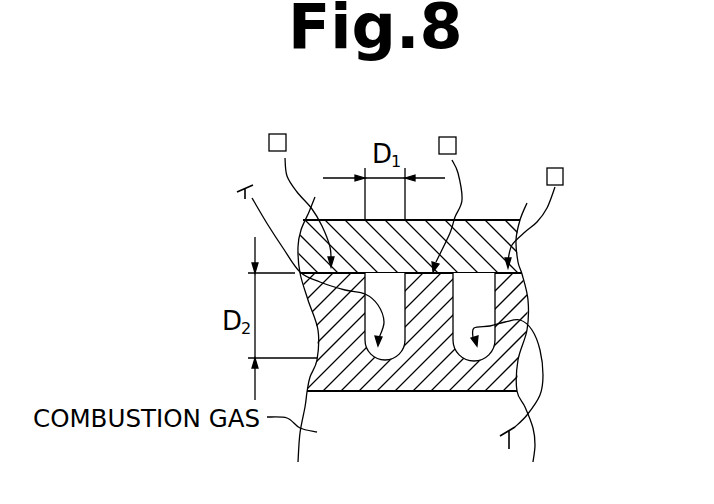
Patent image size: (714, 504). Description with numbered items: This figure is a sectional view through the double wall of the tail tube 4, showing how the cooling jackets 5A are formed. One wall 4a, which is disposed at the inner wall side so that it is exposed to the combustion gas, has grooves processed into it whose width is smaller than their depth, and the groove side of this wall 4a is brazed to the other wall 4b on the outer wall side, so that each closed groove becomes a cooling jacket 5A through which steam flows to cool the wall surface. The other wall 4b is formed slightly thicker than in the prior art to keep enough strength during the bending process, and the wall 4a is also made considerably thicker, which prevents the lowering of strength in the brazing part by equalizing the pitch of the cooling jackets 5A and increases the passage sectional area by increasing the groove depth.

The tail tube 4 is at (420, 282).
The one wall 4a is at (521, 320).
The other wall 4b is at (488, 255).
The cooling jacket 5A is at (468, 370).